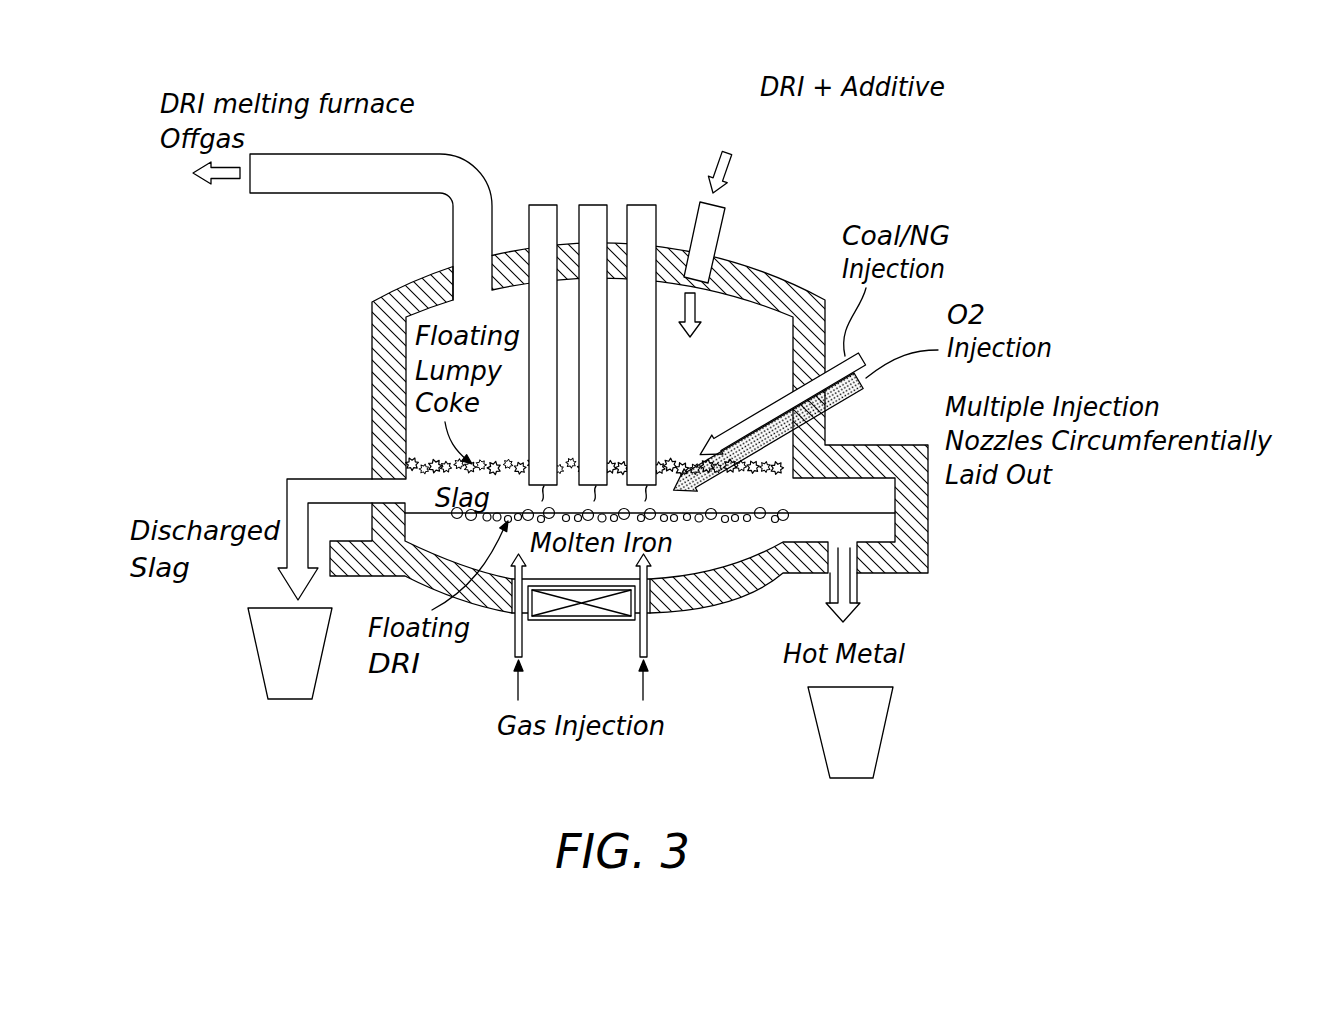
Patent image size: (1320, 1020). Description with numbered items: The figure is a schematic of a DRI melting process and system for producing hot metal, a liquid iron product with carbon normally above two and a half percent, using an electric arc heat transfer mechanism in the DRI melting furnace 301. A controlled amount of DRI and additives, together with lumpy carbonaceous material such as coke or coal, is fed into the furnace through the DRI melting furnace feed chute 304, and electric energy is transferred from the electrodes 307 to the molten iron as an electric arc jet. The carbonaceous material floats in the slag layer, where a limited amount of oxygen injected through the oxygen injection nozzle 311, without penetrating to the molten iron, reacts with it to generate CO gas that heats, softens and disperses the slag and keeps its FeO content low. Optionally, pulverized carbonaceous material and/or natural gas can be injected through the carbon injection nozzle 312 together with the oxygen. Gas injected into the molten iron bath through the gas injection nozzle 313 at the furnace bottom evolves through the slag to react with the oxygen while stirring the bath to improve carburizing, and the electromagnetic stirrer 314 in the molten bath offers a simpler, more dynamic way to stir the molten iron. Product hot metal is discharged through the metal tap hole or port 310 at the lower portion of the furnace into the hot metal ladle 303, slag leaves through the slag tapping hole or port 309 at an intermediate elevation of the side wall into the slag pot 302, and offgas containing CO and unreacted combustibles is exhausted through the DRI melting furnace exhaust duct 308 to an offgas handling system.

The DRI melting furnace 301 is at (372, 402).
The slag pot 302 is at (290, 653).
The hot metal ladle 303 is at (850, 732).
The DRI melting furnace feed chute 304 is at (721, 227).
The electrodes 307 is at (590, 204).
The DRI melting furnace exhaust duct 308 is at (293, 194).
The slag tapping hole or port 309 is at (368, 493).
The metal tap hole or port 310 is at (856, 563).
The oxygen injection nozzle 311 is at (826, 418).
The carbon injection nozzle 312 is at (755, 415).
The gas injection nozzle 313 is at (666, 604).
The electromagnetic stirrer 314 is at (580, 620).